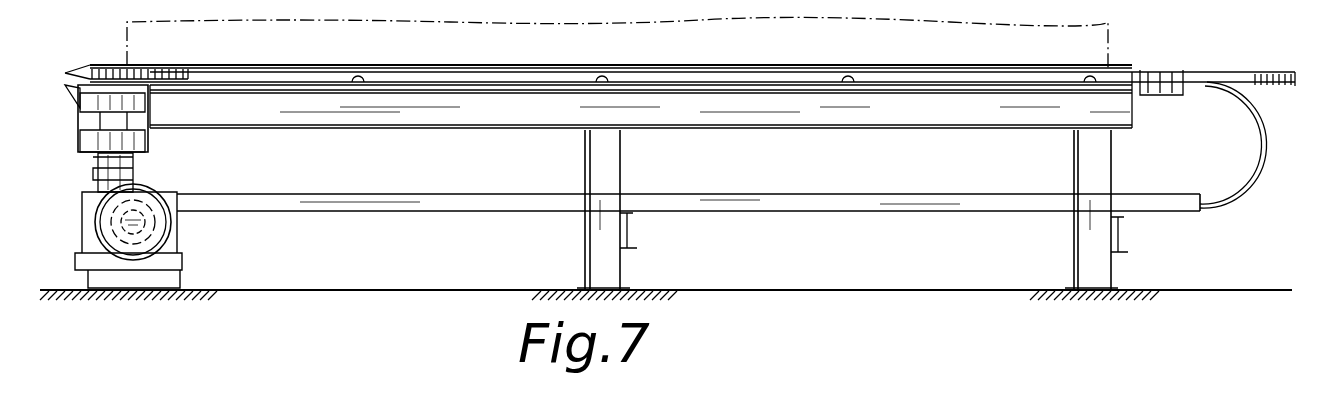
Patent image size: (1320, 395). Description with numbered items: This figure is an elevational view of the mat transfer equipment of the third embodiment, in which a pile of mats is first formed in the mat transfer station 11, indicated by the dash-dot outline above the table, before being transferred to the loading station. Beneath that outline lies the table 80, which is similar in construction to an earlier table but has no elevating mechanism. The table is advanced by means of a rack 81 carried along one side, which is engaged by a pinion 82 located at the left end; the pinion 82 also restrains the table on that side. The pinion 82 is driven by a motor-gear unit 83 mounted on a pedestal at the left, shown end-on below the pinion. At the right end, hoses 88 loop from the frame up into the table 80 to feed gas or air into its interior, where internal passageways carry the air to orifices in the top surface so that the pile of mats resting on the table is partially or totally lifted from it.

The mat transfer station 11 is at (690, 53).
The table 80 is at (403, 63).
The rack 81 is at (217, 75).
The pinion 82 is at (113, 80).
The motor-gear unit 83 is at (112, 225).
The hoses 88 is at (1227, 200).